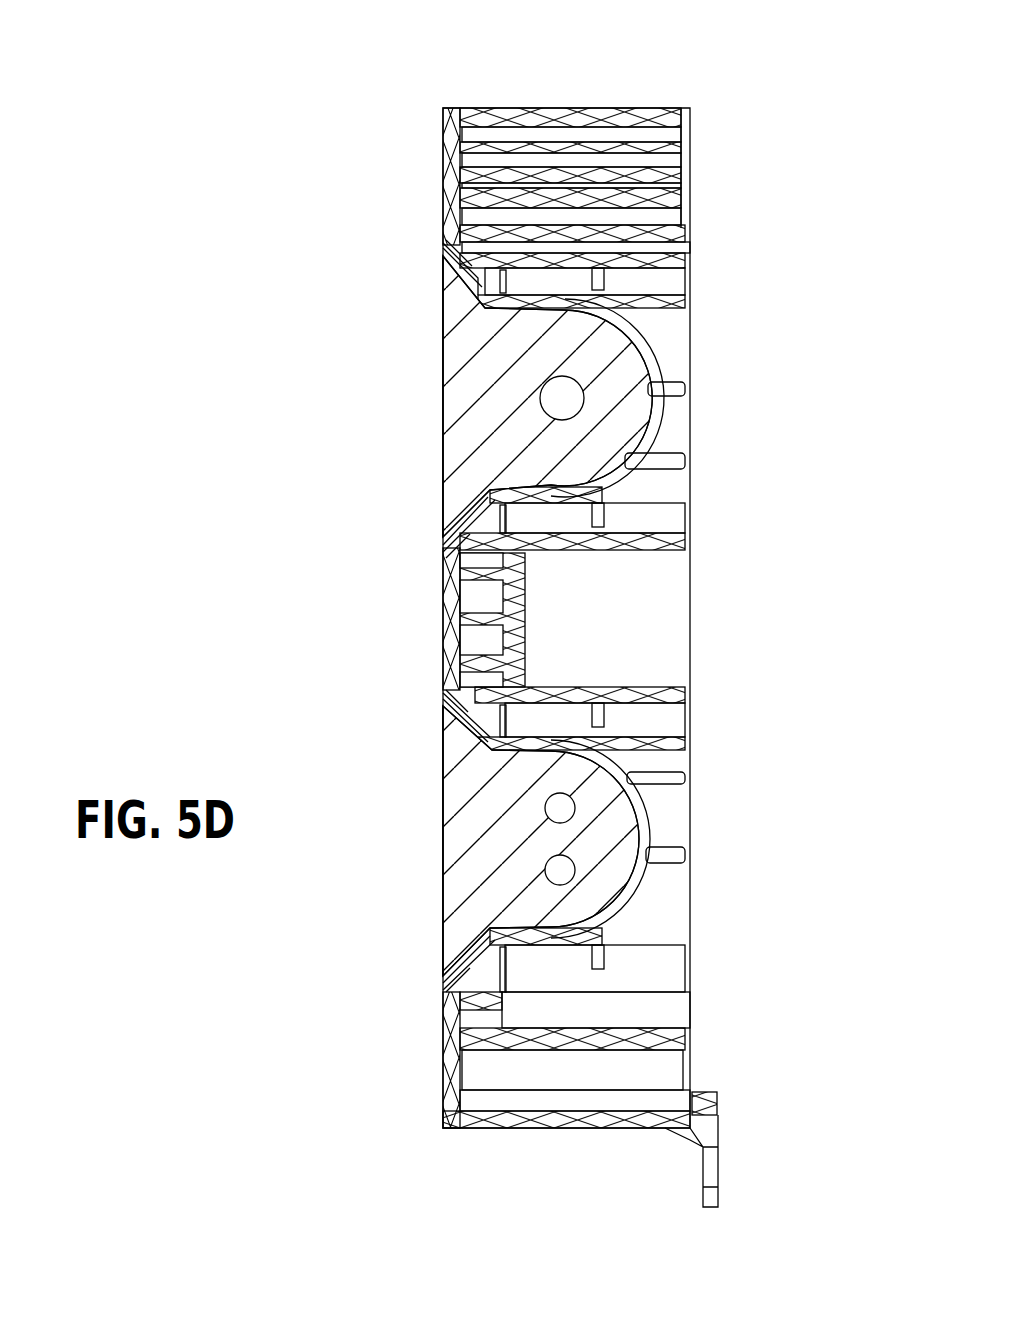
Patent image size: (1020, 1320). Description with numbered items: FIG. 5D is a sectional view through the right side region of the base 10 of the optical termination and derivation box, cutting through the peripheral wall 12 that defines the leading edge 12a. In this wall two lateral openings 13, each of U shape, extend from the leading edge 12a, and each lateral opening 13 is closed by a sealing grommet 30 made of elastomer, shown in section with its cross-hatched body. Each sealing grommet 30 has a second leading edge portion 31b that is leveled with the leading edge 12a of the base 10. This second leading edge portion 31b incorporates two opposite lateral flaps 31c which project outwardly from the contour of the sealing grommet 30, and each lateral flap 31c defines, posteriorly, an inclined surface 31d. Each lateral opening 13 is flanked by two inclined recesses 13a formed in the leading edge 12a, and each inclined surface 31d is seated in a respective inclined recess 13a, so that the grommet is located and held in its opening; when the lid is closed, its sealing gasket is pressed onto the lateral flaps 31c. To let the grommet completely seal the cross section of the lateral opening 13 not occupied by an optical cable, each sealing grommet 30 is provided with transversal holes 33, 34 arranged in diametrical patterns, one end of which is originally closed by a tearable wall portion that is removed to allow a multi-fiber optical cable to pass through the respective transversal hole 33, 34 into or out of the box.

The base 10 is at (715, 100).
The peripheral wall 12 is at (565, 106).
The leading edge 12a is at (441, 157).
The lateral opening 13 is at (634, 417).
The inclined recess 13a is at (470, 278).
The sealing grommet 30 is at (603, 400).
The second leading edge portion 31b is at (441, 410).
The lateral flap 31c is at (445, 273).
The inclined surface 31d is at (472, 295).
The transversal hole 33 is at (568, 412).
The transversal hole 34 is at (562, 814).